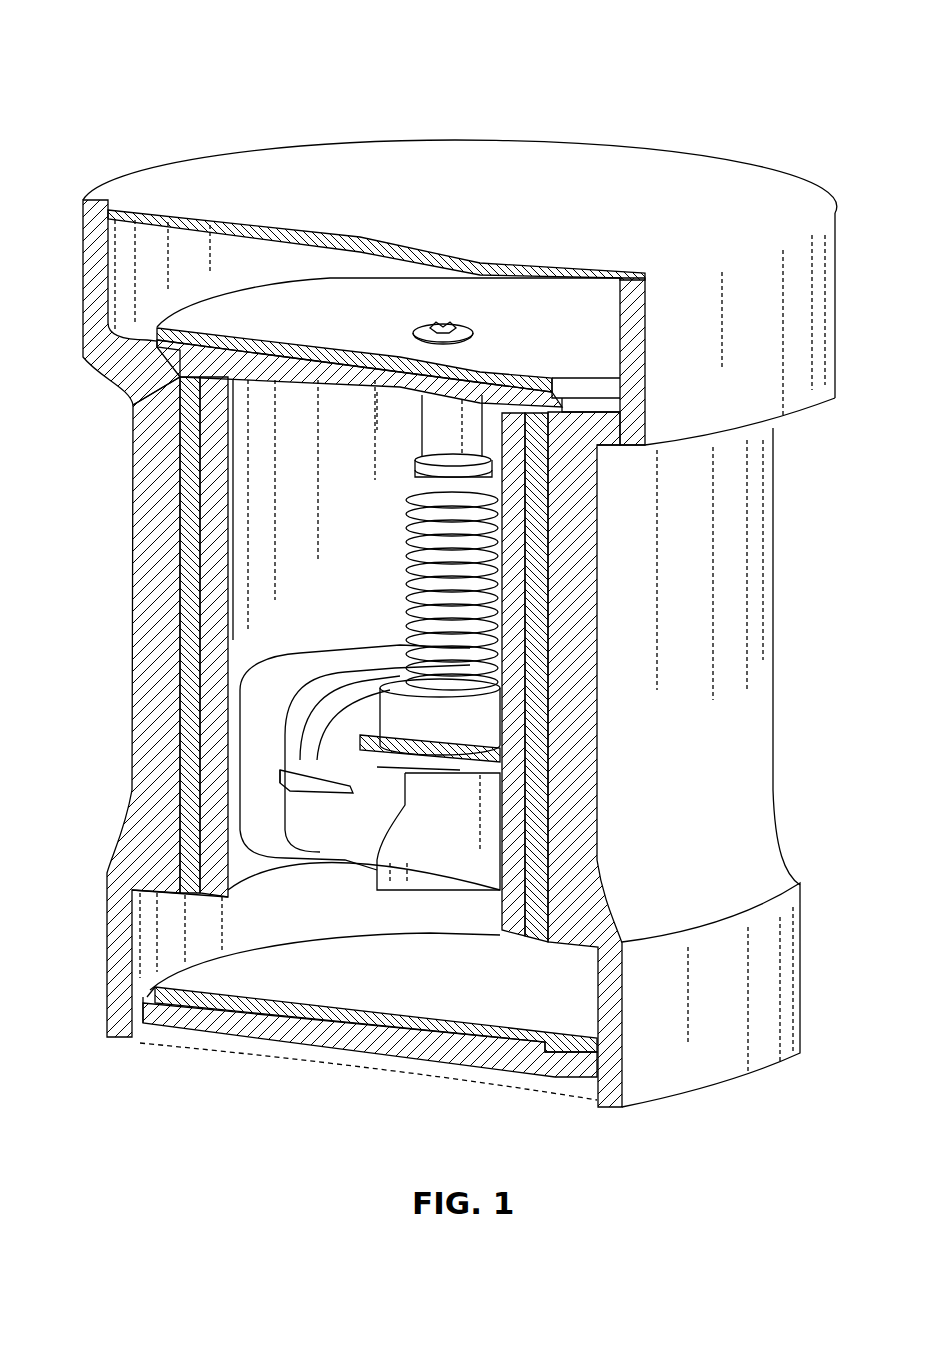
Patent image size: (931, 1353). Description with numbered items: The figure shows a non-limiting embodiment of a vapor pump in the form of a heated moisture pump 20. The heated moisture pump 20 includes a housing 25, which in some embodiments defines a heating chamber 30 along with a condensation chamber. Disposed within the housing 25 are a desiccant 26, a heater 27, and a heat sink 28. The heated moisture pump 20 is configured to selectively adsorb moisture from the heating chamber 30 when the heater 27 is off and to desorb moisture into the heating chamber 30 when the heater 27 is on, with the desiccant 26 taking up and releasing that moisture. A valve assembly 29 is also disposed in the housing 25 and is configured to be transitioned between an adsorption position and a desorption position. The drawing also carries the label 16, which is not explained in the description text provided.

The heated moisture pump 20 is at (129, 101).
The housing 25 is at (84, 357).
The heat sink 28 is at (180, 618).
The desiccant 26 is at (212, 813).
The heater 27 is at (287, 740).
The valve assembly 29 is at (404, 496).
The heating chamber 30 is at (320, 553).
The base plate 16 is at (217, 1078).